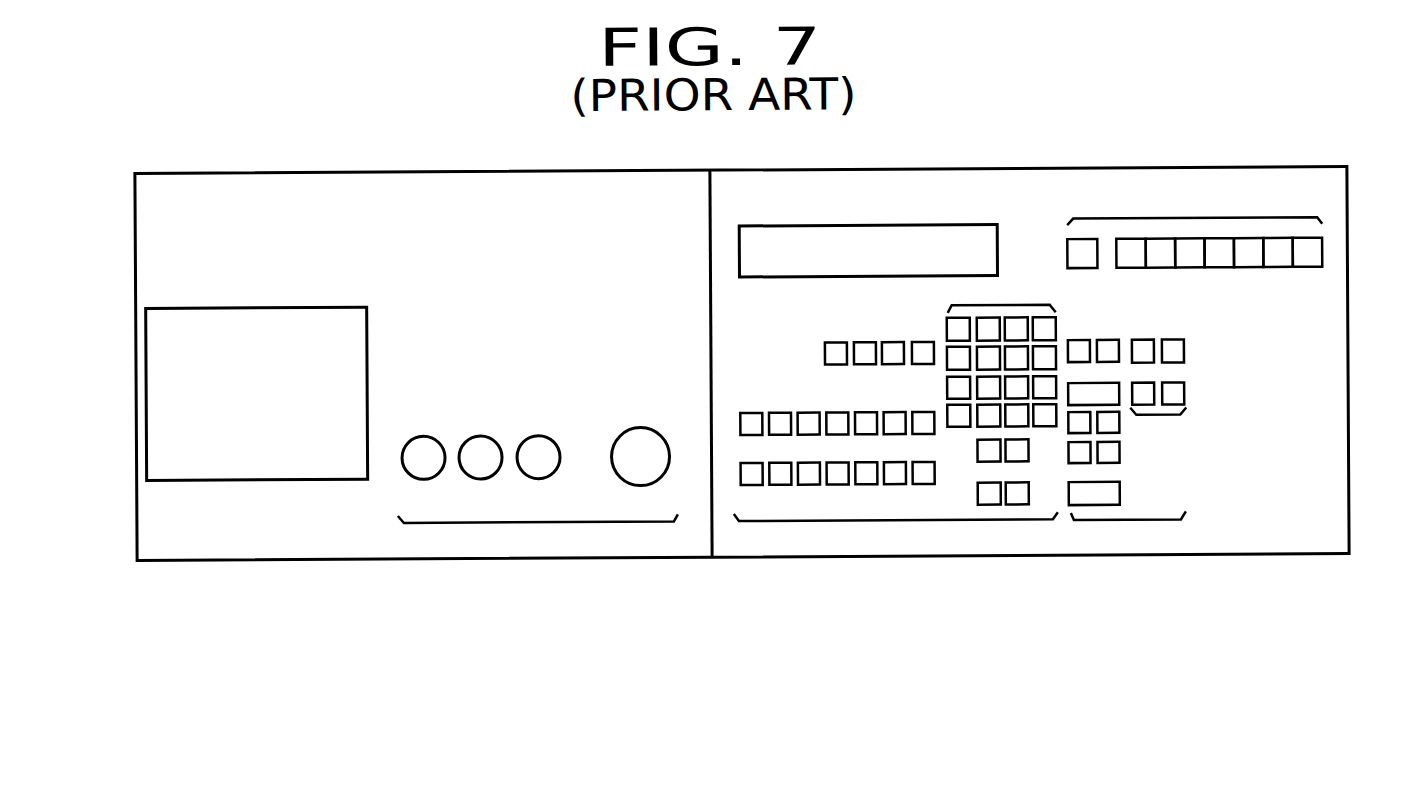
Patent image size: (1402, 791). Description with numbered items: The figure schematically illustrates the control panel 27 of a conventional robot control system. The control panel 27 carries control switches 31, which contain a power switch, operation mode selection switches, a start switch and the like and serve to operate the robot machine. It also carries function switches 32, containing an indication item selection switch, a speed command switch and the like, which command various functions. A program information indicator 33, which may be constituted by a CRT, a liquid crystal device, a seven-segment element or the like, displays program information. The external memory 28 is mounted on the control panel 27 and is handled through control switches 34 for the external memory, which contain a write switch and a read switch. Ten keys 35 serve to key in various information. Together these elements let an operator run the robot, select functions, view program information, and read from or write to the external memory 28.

The control panel 27 is at (197, 557).
The external memory 28 is at (226, 305).
The control switches 31 is at (1095, 507).
The function switches 32 is at (717, 597).
The program information indicator 33 is at (765, 226).
The control switches for the external memory 34 is at (1158, 418).
The ten keys 35 is at (1013, 306).